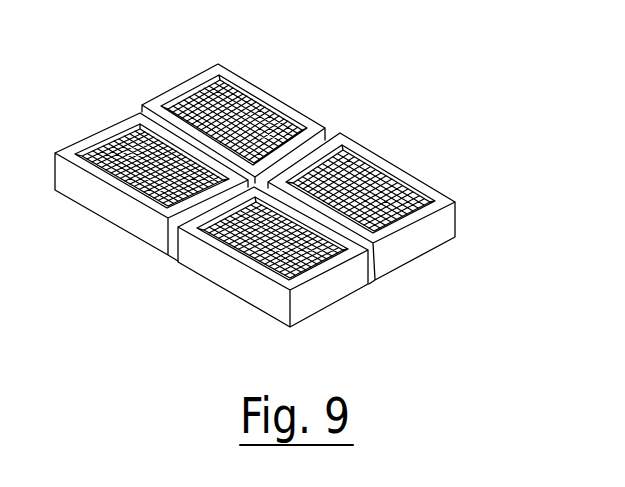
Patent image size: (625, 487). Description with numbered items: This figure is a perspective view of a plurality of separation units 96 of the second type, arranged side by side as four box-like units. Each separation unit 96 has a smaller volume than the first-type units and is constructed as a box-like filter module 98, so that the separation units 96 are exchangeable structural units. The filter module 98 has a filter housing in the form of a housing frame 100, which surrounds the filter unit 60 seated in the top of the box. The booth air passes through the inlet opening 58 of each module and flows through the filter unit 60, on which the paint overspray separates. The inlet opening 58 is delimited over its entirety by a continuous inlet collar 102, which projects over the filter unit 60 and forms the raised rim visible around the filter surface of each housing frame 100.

The inlet opening 58 is at (325, 230).
The filter unit 60 is at (337, 260).
The separation unit of the second type 96 is at (284, 194).
The filter module 98 is at (432, 178).
The housing frame 100 is at (232, 275).
The inlet collar 102 is at (205, 222).